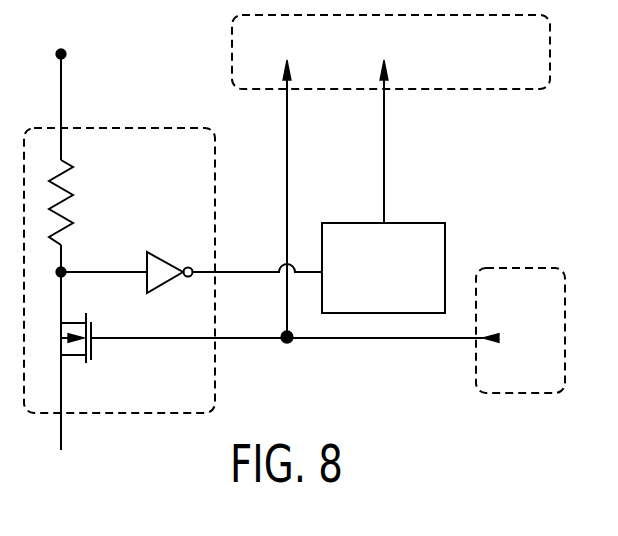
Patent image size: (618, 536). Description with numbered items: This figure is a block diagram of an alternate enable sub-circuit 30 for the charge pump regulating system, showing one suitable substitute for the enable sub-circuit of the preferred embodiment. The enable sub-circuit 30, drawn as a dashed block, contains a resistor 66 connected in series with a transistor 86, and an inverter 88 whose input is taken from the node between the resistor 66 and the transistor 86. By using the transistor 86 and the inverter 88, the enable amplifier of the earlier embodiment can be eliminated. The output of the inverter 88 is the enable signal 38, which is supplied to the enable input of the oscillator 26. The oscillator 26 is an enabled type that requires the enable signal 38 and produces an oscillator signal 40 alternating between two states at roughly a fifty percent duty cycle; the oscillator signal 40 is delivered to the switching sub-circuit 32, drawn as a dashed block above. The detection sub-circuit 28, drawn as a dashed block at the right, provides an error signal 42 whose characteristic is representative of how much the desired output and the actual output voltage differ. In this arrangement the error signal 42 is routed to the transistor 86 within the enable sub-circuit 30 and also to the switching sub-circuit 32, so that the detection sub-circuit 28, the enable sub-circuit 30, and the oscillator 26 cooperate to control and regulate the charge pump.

The oscillator 26 is at (392, 303).
The detection sub-circuit 28 is at (529, 353).
The enable sub-circuit 30 is at (163, 126).
The switching sub-circuit 32 is at (519, 66).
The enable signal 38 is at (107, 274).
The oscillator signal 40 is at (384, 167).
The error signal 42 is at (306, 341).
The resistor 66 is at (73, 190).
The transistor 86 is at (93, 347).
The inverter 88 is at (162, 270).